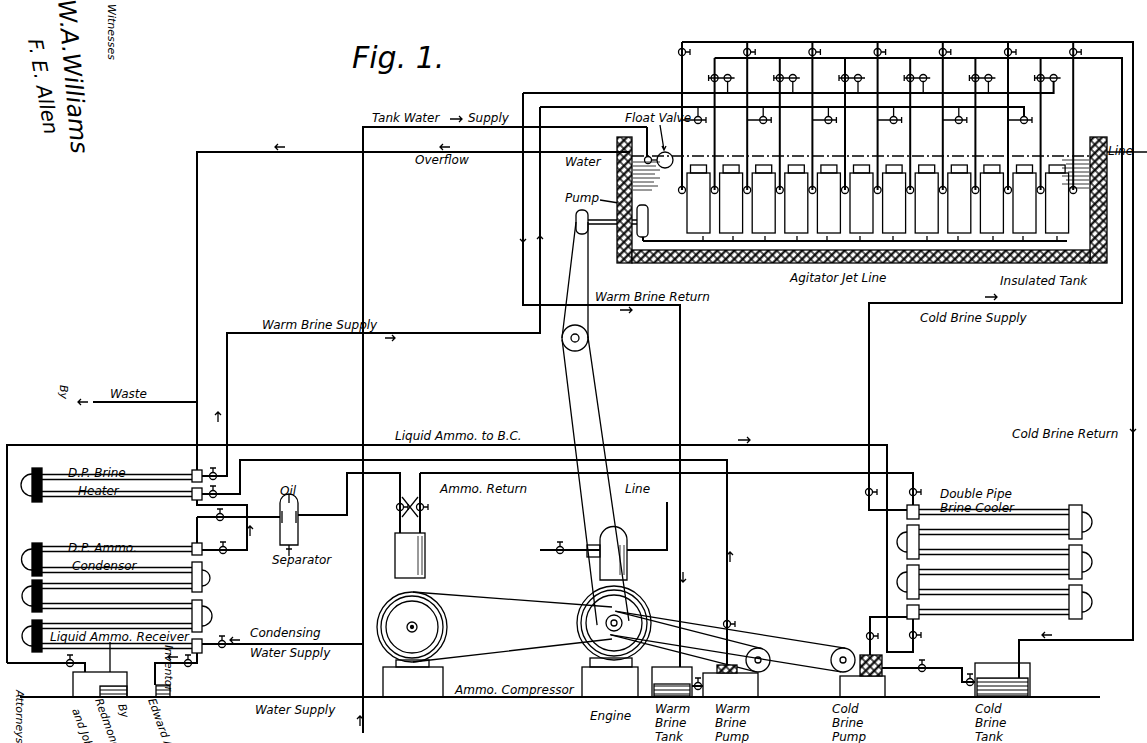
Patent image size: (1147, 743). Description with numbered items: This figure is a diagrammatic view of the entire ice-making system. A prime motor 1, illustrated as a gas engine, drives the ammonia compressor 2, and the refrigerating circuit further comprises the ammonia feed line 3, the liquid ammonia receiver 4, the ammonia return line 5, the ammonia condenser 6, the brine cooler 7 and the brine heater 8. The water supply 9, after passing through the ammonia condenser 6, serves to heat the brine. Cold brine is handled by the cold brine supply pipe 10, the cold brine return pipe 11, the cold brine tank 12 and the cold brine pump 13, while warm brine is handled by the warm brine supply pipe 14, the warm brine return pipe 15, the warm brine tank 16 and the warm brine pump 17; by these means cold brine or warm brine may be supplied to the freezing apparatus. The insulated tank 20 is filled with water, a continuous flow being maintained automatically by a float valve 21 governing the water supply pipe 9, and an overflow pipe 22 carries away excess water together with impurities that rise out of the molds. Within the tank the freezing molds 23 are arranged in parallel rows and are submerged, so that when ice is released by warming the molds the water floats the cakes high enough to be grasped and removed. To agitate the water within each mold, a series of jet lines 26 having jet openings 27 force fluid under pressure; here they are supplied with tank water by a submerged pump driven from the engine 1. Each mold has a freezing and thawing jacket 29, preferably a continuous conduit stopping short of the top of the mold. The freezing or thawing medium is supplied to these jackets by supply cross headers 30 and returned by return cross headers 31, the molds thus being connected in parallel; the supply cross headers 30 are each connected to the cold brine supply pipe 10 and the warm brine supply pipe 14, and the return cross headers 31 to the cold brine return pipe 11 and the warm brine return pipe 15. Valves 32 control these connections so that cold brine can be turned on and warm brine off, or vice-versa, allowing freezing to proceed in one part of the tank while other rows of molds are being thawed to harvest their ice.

The prime motor 1 is at (632, 588).
The ammonia compressor 2 is at (427, 580).
The ammonia feed line 3 is at (295, 445).
The liquid ammonia receiver 4 is at (115, 672).
The ammonia return line 5 is at (827, 473).
The ammonia condenser 6 is at (182, 543).
The brine cooler 7 is at (1057, 510).
The brine heater 8 is at (97, 474).
The water supply 9 is at (365, 248).
The cold brine supply pipe 10 is at (896, 303).
The cold brine return pipe 11 is at (1133, 348).
The cold brine tank 12 is at (995, 665).
The cold brine pump 13 is at (846, 655).
The warm brine supply pipe 14 is at (294, 335).
The warm brine return pipe 15 is at (684, 360).
The warm brine tank 16 is at (654, 668).
The warm brine pump 17 is at (762, 684).
The insulated tank 20 is at (762, 263).
The float valve 21 is at (663, 170).
The overflow pipe 22 is at (276, 158).
The freezing molds 23 is at (878, 199).
The jet lines 26 is at (946, 240).
The jet openings 27 is at (896, 240).
The freezing and thawing jackets 29 is at (650, 246).
The supply cross headers 30 is at (717, 187).
The return cross headers 31 is at (680, 196).
The valves 32 is at (676, 56).